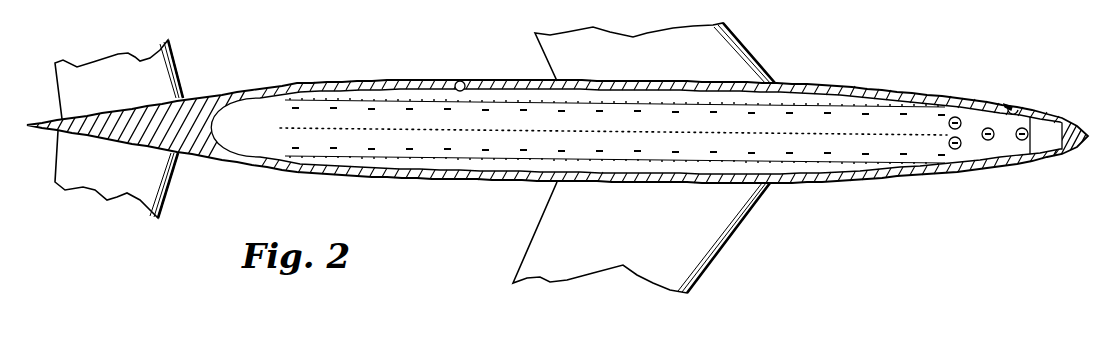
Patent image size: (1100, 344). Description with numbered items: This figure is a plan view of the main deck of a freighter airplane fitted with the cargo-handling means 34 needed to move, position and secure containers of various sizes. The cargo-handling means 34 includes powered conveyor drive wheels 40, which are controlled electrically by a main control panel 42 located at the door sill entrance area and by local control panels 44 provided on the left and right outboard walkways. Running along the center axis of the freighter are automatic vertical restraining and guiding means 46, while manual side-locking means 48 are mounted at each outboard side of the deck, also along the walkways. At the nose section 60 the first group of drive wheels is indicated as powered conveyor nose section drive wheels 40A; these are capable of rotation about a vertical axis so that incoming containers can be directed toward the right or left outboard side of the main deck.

The cargo-handling means 34 is at (878, 129).
The powered conveyor drive wheels 40 is at (895, 154).
The powered conveyor nose section drive wheels 40A is at (960, 150).
The main control panel 42 is at (1013, 104).
The local control panels 44 is at (462, 82).
The automatic vertical restraining and guiding means 46 is at (303, 127).
The manual side-locking means 48 is at (374, 102).
The nose section 60 is at (953, 114).